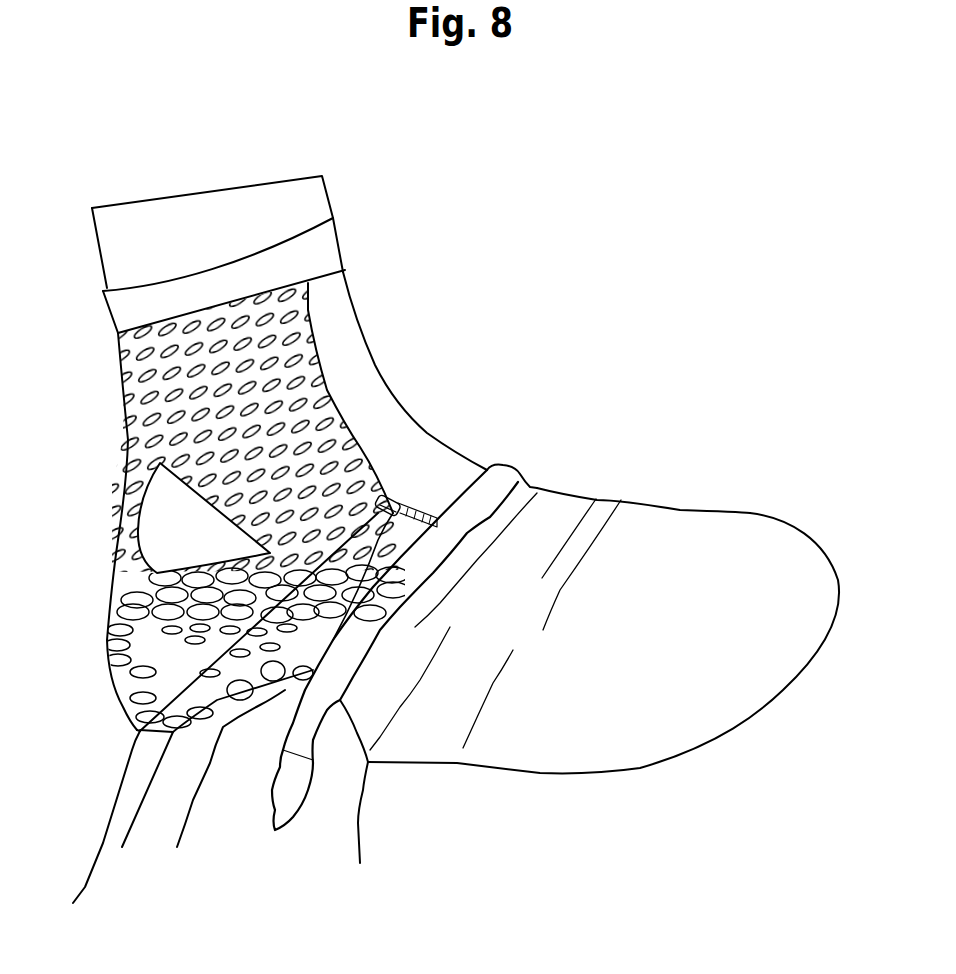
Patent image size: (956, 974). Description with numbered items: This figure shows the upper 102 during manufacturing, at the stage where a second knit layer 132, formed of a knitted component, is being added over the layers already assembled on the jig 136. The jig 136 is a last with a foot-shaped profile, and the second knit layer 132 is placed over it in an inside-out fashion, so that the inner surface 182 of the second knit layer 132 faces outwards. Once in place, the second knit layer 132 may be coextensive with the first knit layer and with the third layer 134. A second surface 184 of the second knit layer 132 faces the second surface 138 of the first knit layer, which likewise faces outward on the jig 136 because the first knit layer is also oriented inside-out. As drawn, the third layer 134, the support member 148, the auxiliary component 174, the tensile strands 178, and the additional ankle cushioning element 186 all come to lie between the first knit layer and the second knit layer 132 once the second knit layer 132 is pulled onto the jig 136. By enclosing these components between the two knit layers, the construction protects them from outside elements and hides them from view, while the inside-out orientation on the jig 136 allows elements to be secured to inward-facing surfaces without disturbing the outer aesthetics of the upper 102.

The upper 102 is at (742, 717).
The second knit layer 132 is at (677, 532).
The third layer 134 is at (136, 388).
The jig 136 is at (202, 205).
The second surface 138 is at (333, 257).
The support member 148 is at (117, 695).
The auxiliary component 174 is at (413, 497).
The tensile strands 178 is at (188, 678).
The inner surface 182 is at (657, 733).
The second surface 184 is at (503, 458).
The additional ankle cushioning element 186 is at (153, 507).